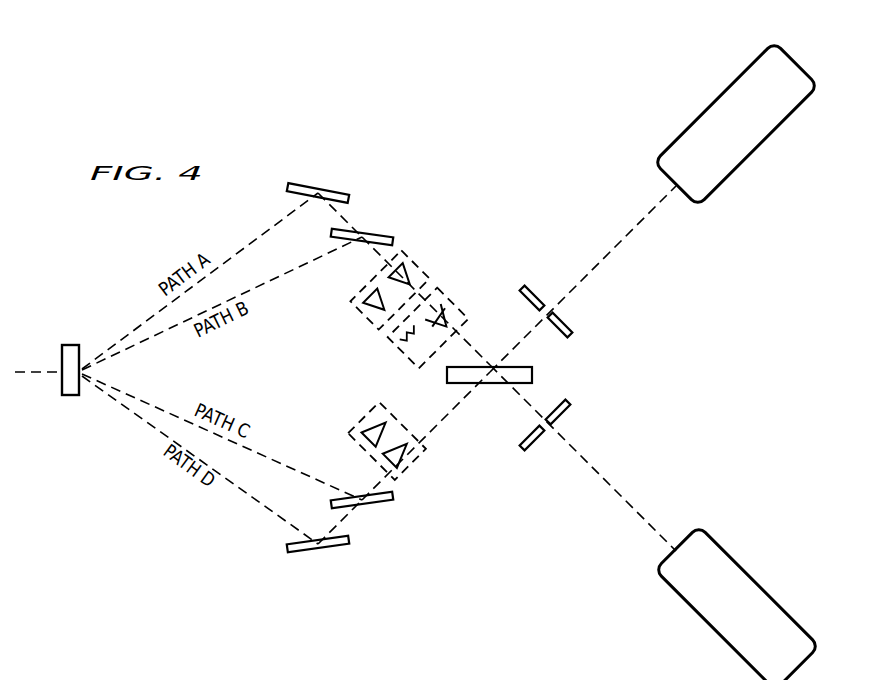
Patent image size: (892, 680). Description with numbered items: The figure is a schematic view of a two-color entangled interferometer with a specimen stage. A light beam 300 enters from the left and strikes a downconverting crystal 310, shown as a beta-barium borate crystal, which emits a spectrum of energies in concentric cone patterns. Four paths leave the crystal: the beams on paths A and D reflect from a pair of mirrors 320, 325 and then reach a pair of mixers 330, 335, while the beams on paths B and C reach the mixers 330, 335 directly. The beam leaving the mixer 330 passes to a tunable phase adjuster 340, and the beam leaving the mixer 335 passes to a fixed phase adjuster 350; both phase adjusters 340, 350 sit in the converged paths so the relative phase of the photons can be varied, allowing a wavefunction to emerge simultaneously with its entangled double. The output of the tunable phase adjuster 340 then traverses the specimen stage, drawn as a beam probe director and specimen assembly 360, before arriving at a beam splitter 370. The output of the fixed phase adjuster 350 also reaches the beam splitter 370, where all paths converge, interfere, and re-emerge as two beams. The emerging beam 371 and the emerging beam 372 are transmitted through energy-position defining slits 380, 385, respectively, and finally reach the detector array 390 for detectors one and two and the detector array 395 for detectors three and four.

The light beam 300 is at (39, 373).
The downconverting crystal 310 is at (70, 345).
The mirror 320 is at (308, 186).
The mirror 325 is at (310, 552).
The mixer 330 is at (365, 231).
The mixer 335 is at (372, 507).
The tunable phase adjuster 340 is at (357, 305).
The fixed phase adjuster 350 is at (412, 466).
The beam probe director and specimen assembly 360 is at (455, 308).
The beam splitter 370 is at (487, 384).
The emerging beam 371 is at (632, 222).
The emerging beam 372 is at (630, 508).
The energy-position defining slits 380 is at (567, 320).
The energy-position defining slits 385 is at (565, 408).
The detector array 1 and 2 390 is at (760, 148).
The detector array 3 and 4 395 is at (760, 588).